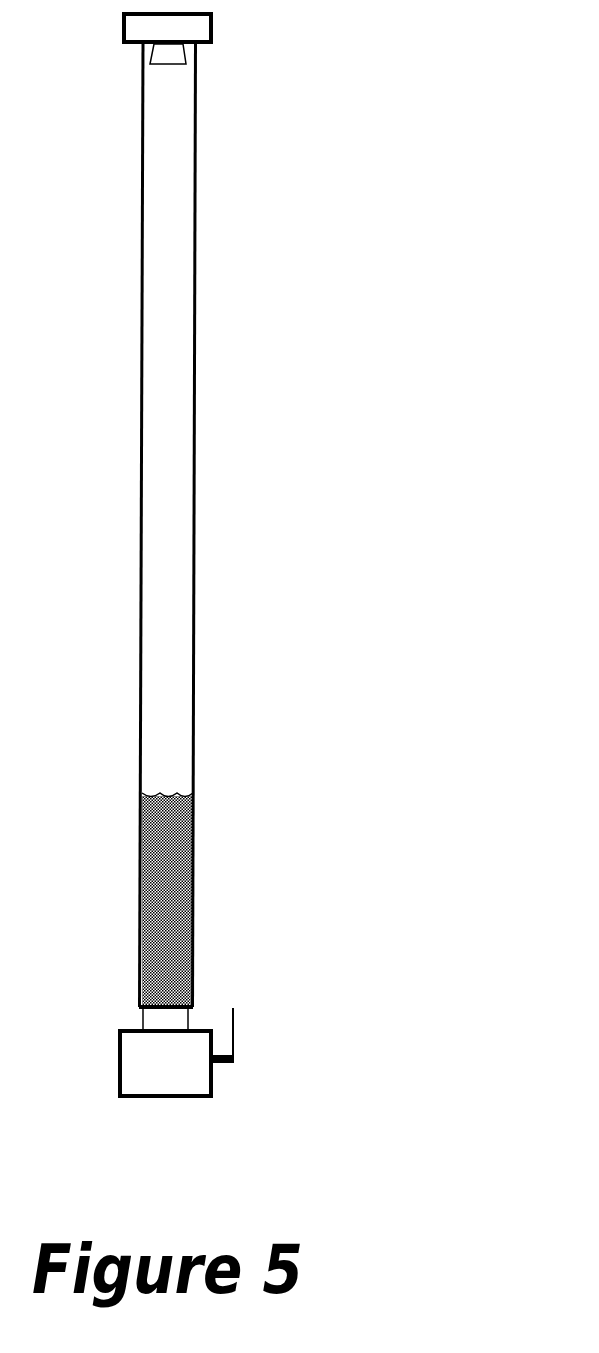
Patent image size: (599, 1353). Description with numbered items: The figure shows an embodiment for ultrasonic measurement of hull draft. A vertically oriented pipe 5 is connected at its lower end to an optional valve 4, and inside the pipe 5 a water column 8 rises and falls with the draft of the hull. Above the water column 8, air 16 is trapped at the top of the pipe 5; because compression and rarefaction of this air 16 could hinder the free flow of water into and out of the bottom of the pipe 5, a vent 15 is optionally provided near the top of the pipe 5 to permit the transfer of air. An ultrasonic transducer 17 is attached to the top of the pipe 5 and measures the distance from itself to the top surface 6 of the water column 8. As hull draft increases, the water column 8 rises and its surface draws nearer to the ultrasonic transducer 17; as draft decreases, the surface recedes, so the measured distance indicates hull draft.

The valve 4 is at (118, 1045).
The pipe 5 is at (142, 222).
The liquid surface 6 is at (160, 793).
The water column 8 is at (155, 912).
The vent 15 is at (137, 54).
The air 16 is at (172, 465).
The ultrasonic transducer 17 is at (168, 65).